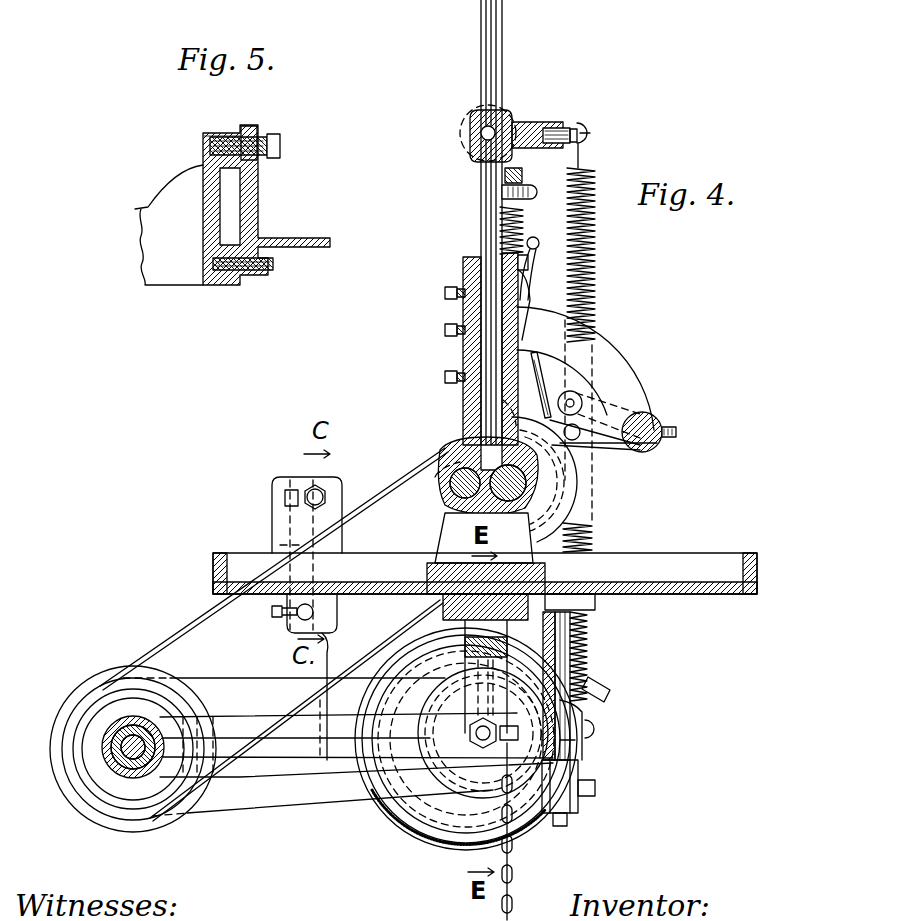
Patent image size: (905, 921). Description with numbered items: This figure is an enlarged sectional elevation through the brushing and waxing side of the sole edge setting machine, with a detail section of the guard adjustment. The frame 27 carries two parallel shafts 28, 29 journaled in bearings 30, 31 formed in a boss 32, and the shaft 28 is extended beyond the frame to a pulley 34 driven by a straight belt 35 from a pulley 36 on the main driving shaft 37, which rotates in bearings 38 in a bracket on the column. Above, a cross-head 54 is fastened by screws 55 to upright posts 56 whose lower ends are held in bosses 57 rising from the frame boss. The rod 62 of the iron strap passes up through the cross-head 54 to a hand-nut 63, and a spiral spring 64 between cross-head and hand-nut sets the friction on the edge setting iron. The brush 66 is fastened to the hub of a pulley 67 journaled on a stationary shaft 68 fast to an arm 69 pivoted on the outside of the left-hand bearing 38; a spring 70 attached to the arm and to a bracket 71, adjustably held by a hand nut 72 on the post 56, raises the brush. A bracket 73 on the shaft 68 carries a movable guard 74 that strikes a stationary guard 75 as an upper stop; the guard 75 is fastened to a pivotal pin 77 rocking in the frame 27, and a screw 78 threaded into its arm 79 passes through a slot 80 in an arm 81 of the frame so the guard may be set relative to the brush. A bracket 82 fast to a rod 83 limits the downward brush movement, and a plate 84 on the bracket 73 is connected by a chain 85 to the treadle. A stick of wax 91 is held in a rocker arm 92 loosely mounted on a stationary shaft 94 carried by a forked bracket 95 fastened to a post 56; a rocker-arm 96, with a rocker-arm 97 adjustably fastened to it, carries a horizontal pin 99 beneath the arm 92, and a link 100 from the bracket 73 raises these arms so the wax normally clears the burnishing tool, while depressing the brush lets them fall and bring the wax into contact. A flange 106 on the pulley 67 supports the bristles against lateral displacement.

In FIG. 4, the frame 27 is at (485, 590).
In FIG. 4, the shaft 28 is at (578, 486).
In FIG. 4, the shaft 29 is at (450, 485).
In FIG. 4, the bearings 30 is at (522, 493).
In FIG. 4, the bearings 31 is at (436, 477).
In FIG. 4, the boss 32 is at (461, 514).
In FIG. 4, the pulley 34 is at (593, 539).
In FIG. 4, the straight belt 35 is at (197, 620).
In FIG. 4, the pulley 36 is at (76, 704).
In FIG. 4, the main driving shaft 37 is at (112, 767).
In FIG. 4, the bearings 38 is at (112, 756).
In FIG. 4, the cross-head 54 is at (463, 265).
In FIG. 4, the screws 55 is at (446, 292).
In FIG. 4, the upright posts 56 is at (481, 85).
In FIG. 4, the bosses 57 is at (503, 422).
In FIG. 4, the rod 62 is at (521, 171).
In FIG. 4, the hand-nut 63 is at (538, 189).
In FIG. 4, the spiral spring 64 is at (522, 224).
In FIG. 4, the brush 66 is at (421, 809).
In FIG. 4, the pulley 67 is at (576, 691).
In FIG. 4, the stationary shaft 68 is at (483, 745).
In FIG. 4, the arm 69 is at (311, 769).
In FIG. 4, the spring 70 is at (596, 300).
In FIG. 4, the bracket 71 is at (532, 127).
In FIG. 4, the hand nut 72 is at (462, 152).
In FIG. 4, the bracket 73 is at (476, 712).
In FIG. 4, the guard 74 is at (382, 811).
In FIG. 5, the stationary guard 75 is at (146, 209).
In FIG. 4, the stationary guard 75 is at (347, 692).
In FIG. 5, the pivotal pin 77 is at (270, 268).
In FIG. 4, the pivotal pin 77 is at (299, 615).
In FIG. 5, the screw 78 is at (272, 144).
In FIG. 4, the screw 78 is at (304, 488).
In FIG. 5, the arm 79 is at (215, 133).
In FIG. 4, the arm 79 is at (281, 544).
In FIG. 5, the slot 80 is at (260, 160).
In FIG. 4, the slot 80 is at (286, 496).
In FIG. 5, the arm 81 is at (258, 212).
In FIG. 4, the arm 81 is at (272, 514).
In FIG. 4, the bracket 82 is at (575, 771).
In FIG. 4, the rod 83 is at (558, 826).
In FIG. 4, the plate 84 is at (562, 703).
In FIG. 4, the chain 85 is at (514, 896).
In FIG. 4, the stick of wax 91 is at (549, 367).
In FIG. 4, the rocker arm 92 is at (576, 400).
In FIG. 4, the stationary shaft 94 is at (661, 425).
In FIG. 4, the forked bracket 95 is at (537, 327).
In FIG. 4, the rocker-arm 96 is at (582, 425).
In FIG. 4, the rocker-arm 97 is at (649, 445).
In FIG. 4, the horizontal pin 99 is at (578, 438).
In FIG. 4, the link 100 is at (507, 411).
In FIG. 4, the flange 106 is at (461, 811).